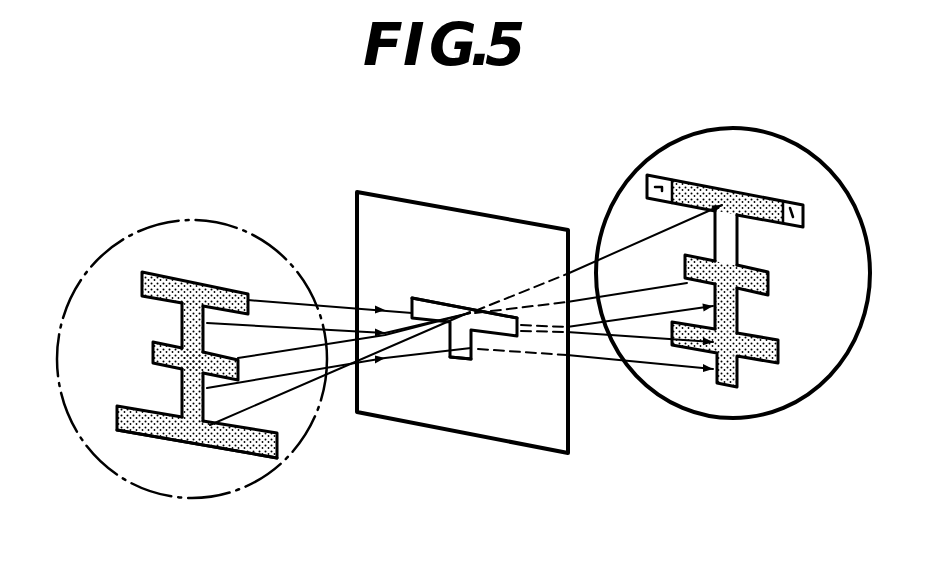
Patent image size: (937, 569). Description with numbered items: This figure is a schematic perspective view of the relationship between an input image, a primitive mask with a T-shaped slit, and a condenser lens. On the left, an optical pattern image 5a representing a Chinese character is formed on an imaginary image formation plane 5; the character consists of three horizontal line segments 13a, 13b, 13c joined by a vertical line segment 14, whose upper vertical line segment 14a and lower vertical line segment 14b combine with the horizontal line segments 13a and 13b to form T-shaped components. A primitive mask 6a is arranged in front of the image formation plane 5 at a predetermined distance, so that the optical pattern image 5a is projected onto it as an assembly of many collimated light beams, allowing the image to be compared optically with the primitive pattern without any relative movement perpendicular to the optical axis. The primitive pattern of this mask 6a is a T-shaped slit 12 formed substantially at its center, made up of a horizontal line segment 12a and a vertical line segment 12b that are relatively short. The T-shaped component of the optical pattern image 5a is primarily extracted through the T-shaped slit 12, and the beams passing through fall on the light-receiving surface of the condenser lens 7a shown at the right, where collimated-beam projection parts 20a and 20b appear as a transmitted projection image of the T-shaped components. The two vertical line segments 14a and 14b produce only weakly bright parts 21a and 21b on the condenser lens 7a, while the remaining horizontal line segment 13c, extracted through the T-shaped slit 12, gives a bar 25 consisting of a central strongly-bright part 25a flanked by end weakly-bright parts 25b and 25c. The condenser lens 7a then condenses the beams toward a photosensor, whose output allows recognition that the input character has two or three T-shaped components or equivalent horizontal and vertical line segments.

The image formation plane 5 is at (160, 220).
The optical pattern image 5a is at (227, 458).
The horizontal line segment 13a is at (152, 273).
The horizontal line segment 13b is at (153, 353).
The horizontal line segment 13c is at (128, 430).
The vertical line segment 14 is at (180, 335).
The upper vertical line segment 14a is at (178, 298).
The lower vertical line segment 14b is at (163, 440).
The primitive mask 6a is at (462, 245).
The T-shaped slit 12 is at (450, 362).
The horizontal line segment 12a is at (428, 303).
The vertical line segment 12b is at (462, 362).
The condenser lens 7a is at (775, 175).
The upper image bar 25 is at (737, 192).
The central strongly-bright part 25a is at (693, 186).
The end weakly-bright part 25b is at (648, 187).
The end weakly-bright part 25c is at (798, 205).
The weakly bright part 21b is at (727, 243).
The collimated-beam projection part 20b is at (770, 282).
The weakly bright part 21a is at (740, 323).
The collimated-beam projection part 20a is at (750, 362).